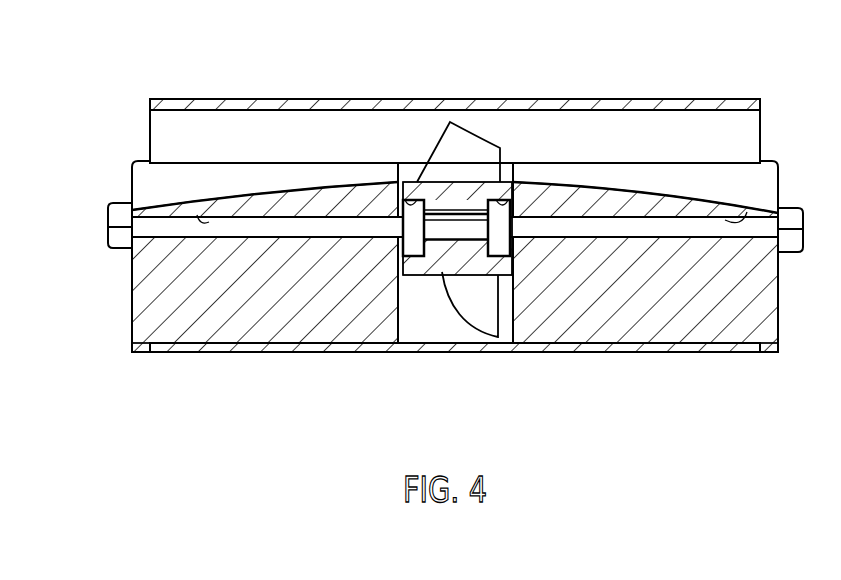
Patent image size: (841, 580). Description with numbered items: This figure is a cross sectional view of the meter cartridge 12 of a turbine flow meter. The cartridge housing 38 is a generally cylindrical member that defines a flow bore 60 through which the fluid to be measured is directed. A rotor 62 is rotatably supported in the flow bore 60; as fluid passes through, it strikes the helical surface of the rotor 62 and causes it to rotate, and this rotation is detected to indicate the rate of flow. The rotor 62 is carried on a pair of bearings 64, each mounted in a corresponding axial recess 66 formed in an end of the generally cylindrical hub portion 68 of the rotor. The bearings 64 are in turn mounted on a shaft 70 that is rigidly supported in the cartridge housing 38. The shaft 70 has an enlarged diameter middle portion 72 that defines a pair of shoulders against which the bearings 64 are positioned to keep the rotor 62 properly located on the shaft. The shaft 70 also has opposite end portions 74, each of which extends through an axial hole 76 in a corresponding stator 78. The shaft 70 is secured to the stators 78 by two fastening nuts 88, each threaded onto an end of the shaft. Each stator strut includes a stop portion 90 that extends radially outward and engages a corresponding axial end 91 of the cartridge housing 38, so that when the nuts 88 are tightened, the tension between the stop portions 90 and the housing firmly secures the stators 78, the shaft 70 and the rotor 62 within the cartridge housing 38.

The meter cartridge 12 is at (614, 92).
The cartridge housing 38 is at (286, 99).
The flow bore 60 is at (646, 152).
The rotor 62 is at (490, 126).
The bearings 64 is at (403, 252).
The axial recess 66 is at (404, 205).
The hub portion 68 is at (448, 182).
The shaft 70 is at (670, 207).
The enlarged diameter middle portion 72 is at (448, 243).
The end portions 74 is at (225, 236).
The axial hole 76 is at (197, 215).
The stator 78 is at (286, 350).
The fastening nuts 88 is at (121, 250).
The stop portion 90 is at (140, 353).
The axial end 91 is at (150, 101).